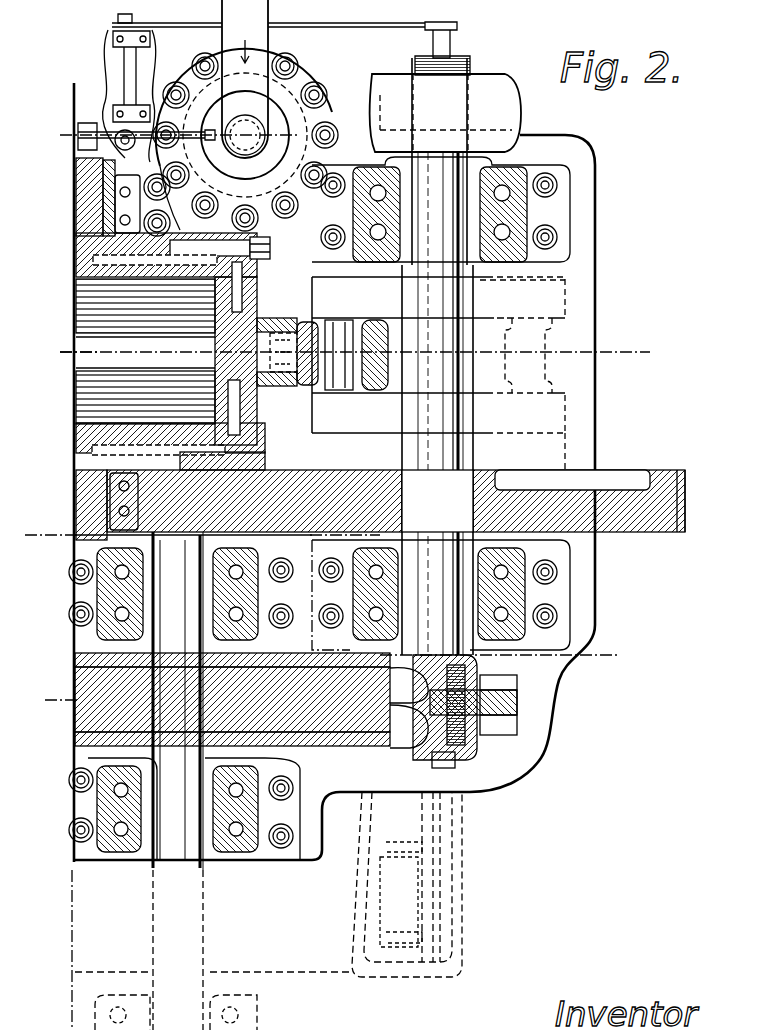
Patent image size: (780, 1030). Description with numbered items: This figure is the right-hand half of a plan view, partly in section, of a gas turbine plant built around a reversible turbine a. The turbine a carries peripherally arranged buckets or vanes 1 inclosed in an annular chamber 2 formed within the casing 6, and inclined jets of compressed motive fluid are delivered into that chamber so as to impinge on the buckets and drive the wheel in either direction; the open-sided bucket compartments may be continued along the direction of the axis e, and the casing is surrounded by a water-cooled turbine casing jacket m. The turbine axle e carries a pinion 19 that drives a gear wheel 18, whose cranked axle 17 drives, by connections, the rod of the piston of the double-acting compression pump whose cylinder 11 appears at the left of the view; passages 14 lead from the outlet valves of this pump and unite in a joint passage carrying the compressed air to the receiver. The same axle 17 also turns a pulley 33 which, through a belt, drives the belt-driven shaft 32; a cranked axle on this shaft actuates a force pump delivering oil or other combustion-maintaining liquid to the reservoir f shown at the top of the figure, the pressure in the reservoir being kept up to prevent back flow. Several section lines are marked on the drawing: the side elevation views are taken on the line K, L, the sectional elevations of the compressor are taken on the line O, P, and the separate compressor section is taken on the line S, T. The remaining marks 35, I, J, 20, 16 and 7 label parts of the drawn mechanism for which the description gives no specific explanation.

The connecting rod 35 is at (222, 9).
The reservoir f is at (300, 85).
The pulley 33 is at (457, 42).
The belt-driven shaft 32 is at (108, 60).
The section line S, T S is at (83, 103).
The rod I is at (78, 135).
The sprocket casing J is at (254, 139).
The bearing 20 is at (80, 184).
The passages 14 is at (78, 226).
The cylinder 11 is at (145, 351).
The hub 16 is at (223, 353).
The section line O, P O is at (67, 352).
The axle 17 is at (453, 180).
The section line O P is at (469, 272).
The pinion 19 is at (230, 482).
The gear wheel 18 is at (662, 486).
The axle of the turbine e is at (176, 862).
The section line K, L K is at (156, 584).
The section line K L is at (484, 603).
The turbine a is at (288, 715).
The casing 6 is at (78, 745).
The buckets or vanes 1 is at (455, 677).
The turbine casing jacket m is at (520, 712).
The ball joint 7 is at (405, 755).
The annular chamber 2 is at (497, 772).
The section line S T is at (206, 1001).